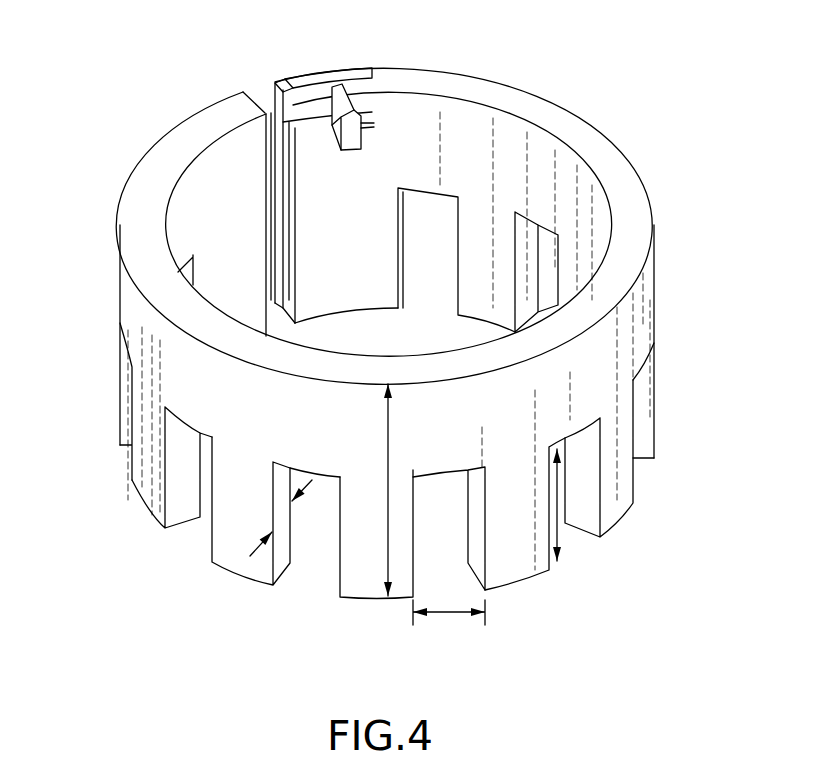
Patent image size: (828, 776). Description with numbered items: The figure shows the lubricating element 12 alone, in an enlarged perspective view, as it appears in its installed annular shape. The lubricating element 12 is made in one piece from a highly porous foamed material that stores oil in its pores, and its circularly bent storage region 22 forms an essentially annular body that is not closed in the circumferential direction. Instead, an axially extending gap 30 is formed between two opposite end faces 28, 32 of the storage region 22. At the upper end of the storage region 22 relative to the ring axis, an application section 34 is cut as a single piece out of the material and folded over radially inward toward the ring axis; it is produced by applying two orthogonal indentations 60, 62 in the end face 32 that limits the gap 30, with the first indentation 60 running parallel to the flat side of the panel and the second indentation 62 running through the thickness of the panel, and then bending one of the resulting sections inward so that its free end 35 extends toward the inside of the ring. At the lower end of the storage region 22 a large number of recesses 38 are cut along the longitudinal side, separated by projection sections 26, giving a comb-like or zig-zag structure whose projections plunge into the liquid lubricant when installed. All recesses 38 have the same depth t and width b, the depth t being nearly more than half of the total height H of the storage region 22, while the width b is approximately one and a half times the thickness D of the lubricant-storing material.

The lubricating element 12 is at (603, 82).
The storage region 22 is at (628, 320).
The projection section 26 is at (365, 583).
The end face 28 is at (248, 92).
The gap 30 is at (271, 160).
The end face 32 is at (290, 193).
The application section 34 is at (347, 100).
The free end 35 is at (352, 142).
The recess 38 is at (120, 453).
The first indentation 60 is at (288, 258).
The second indentation 62 is at (297, 120).
The total height H is at (388, 533).
The depth t is at (558, 525).
The width b is at (450, 612).
The thickness D is at (282, 517).